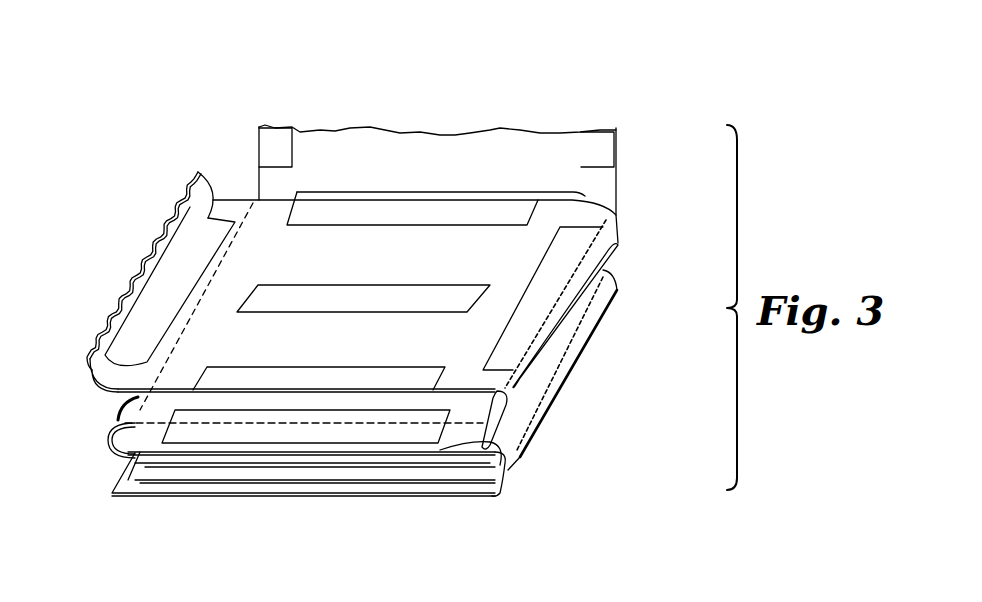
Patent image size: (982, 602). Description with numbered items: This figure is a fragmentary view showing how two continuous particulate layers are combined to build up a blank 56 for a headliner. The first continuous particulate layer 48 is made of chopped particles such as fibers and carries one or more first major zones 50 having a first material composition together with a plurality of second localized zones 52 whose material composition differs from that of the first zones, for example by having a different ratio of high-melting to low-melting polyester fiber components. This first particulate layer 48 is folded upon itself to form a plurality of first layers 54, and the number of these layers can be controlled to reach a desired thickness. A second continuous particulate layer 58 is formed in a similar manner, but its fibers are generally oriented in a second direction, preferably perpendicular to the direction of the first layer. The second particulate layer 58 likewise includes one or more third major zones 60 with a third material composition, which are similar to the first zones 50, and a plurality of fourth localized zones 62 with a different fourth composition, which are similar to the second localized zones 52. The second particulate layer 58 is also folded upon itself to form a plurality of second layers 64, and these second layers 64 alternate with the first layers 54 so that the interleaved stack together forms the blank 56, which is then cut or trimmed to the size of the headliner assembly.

The first continuous particulate layer 48 is at (113, 316).
The first major zones 50 is at (117, 377).
The second localized zones 52 is at (215, 210).
The first layers 54 is at (590, 197).
The blank 56 is at (573, 417).
The second continuous particulate layer 58 is at (527, 128).
The third major zones 60 is at (597, 178).
The fourth localized zones 62 is at (618, 145).
The second layers 64 is at (500, 477).